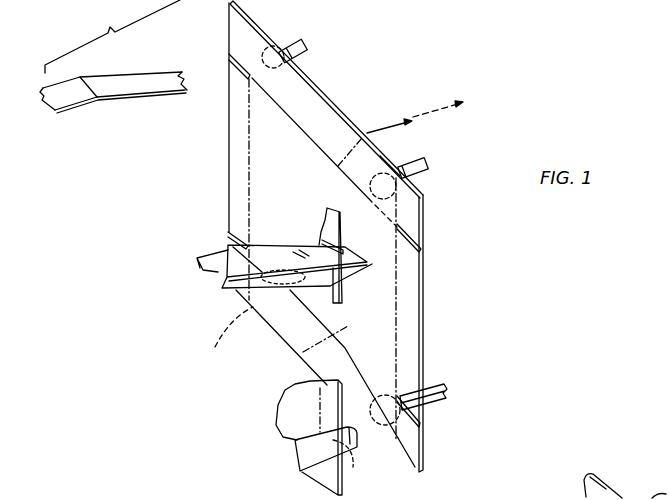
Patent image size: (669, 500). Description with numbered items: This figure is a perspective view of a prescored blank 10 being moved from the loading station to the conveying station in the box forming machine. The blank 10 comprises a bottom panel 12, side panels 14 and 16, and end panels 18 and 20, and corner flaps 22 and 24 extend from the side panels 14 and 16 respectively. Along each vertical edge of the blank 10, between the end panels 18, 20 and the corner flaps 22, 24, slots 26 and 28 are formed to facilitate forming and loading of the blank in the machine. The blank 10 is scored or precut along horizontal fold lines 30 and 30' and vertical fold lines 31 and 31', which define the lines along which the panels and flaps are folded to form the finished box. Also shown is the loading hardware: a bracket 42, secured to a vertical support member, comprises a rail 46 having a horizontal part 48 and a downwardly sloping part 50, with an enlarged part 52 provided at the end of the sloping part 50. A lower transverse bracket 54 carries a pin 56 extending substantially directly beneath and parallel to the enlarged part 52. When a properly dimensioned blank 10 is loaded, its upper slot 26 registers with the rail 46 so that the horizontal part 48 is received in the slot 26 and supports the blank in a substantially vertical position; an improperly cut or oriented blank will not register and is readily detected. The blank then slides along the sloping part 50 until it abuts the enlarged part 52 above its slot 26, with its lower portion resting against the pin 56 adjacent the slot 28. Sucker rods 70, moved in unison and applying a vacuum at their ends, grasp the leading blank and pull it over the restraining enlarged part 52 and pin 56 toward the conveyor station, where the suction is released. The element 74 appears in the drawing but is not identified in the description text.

The blank 10 is at (224, 152).
The bottom panel 12 is at (281, 171).
The side panel 14 is at (392, 170).
The side panel 16 is at (280, 320).
The end panel 18 is at (229, 186).
The end panel 20 is at (416, 305).
The corner flap 22 is at (238, 27).
The corner flap 24 is at (240, 297).
The upper slot 26 is at (229, 54).
The lower slot 28 is at (244, 245).
The horizontal fold line 30 is at (412, 117).
The horizontal fold line 30' is at (303, 354).
The vertical fold line 31 is at (429, 323).
The vertical fold line 31' is at (219, 116).
The bracket 42 is at (137, 100).
The rail 46 is at (122, 88).
The horizontal part 48 is at (62, 100).
The downwardly sloping part 50 is at (146, 86).
The enlarged part 52 is at (187, 78).
The lower transverse bracket 54 is at (313, 464).
The pin 56 is at (347, 462).
The sucker rod 70 is at (284, 46).
The bracket member 74 is at (620, 497).